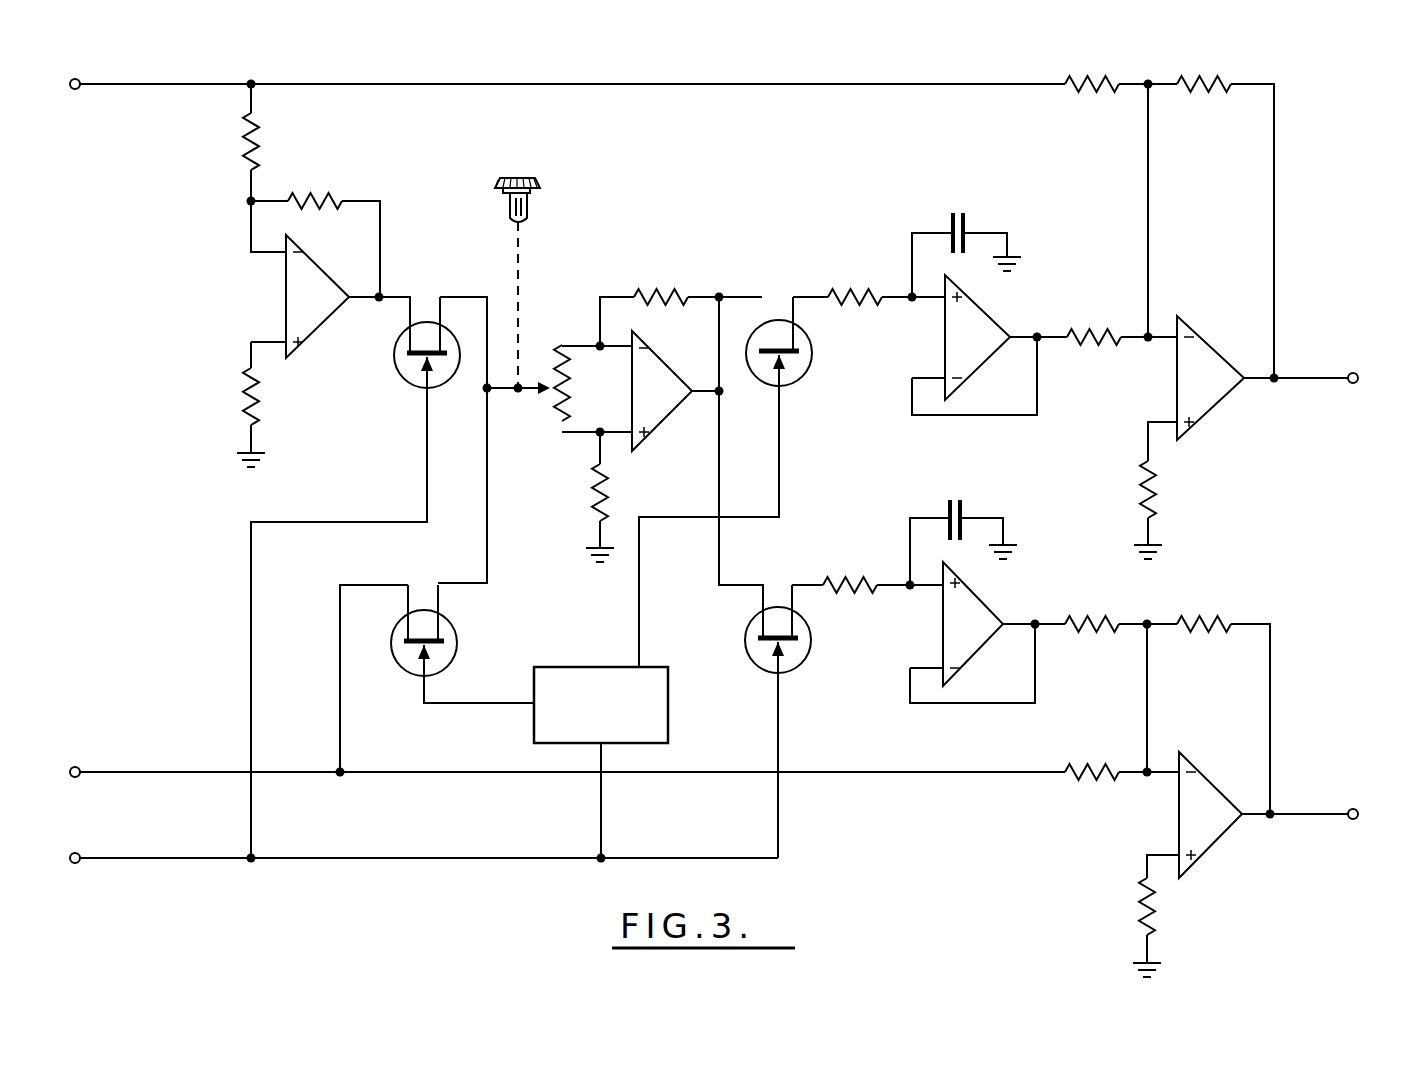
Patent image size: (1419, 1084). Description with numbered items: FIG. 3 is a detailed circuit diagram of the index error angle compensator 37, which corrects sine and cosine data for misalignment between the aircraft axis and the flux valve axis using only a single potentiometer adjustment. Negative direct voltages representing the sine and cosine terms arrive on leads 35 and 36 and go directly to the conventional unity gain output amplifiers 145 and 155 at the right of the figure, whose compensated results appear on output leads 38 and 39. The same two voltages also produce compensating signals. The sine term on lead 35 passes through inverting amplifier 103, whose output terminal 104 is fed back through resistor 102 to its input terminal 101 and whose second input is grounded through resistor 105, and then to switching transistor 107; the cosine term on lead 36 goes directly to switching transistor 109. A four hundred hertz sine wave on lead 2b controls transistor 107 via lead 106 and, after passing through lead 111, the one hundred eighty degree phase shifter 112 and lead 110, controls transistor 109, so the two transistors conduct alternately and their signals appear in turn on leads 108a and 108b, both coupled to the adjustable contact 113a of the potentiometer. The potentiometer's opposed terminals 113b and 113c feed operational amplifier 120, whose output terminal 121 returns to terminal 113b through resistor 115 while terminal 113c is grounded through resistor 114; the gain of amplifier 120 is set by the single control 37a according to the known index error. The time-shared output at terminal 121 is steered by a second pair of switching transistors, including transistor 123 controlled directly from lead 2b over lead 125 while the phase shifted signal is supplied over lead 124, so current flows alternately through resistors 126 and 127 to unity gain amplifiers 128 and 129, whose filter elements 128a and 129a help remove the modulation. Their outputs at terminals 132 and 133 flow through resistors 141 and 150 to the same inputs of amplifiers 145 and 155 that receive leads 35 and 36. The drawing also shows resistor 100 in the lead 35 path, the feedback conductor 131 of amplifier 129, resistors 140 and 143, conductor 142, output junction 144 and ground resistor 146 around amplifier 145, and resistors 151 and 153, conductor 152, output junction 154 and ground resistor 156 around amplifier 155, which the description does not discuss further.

The lead 2b is at (130, 860).
The lead 35 is at (112, 86).
The lead 36 is at (130, 775).
The index error angle compensator 37 is at (1308, 109).
The single control 37a is at (534, 180).
The output lead 38 is at (1328, 378).
The output lead 39 is at (1344, 814).
The resistor 100 is at (266, 148).
The input terminal 101 is at (245, 201).
The resistor 102 is at (318, 192).
The inverting amplifier 103 is at (285, 297).
The output terminal 104 is at (384, 296).
The resistor 105 is at (249, 395).
The lead 106 is at (250, 586).
The switching transistor 107 is at (394, 362).
The lead 108a is at (443, 296).
The lead 108b is at (486, 554).
The switching transistor 109 is at (448, 634).
The lead 110 is at (462, 706).
The lead 111 is at (598, 818).
The 180° phase shifter 112 is at (578, 667).
The adjustable contact 113a is at (531, 398).
The terminal 113b is at (600, 342).
The terminal 113c is at (604, 436).
The resistor 114 is at (602, 505).
The resistor 115 is at (650, 290).
The operational amplifier 120 is at (662, 367).
The output terminal 121 is at (724, 396).
The switching transistor 123 is at (748, 627).
The lead 124 is at (781, 450).
The lead 125 is at (778, 734).
The resistor 126 is at (843, 290).
The resistor 127 is at (842, 580).
The unity gain amplifier 128 is at (942, 351).
The filter resistor 128a is at (959, 214).
The unity gain amplifier 129 is at (940, 637).
The filter resistor 129a is at (967, 506).
The feedback conductor 131 is at (975, 705).
The output terminal 132 is at (1043, 341).
The output terminal 133 is at (1033, 620).
The resistor 140 is at (1093, 90).
The resistor 141 is at (1088, 331).
The conductor 142 is at (1149, 213).
The feedback resistor 143 is at (1205, 90).
The output junction 144 is at (1274, 383).
The unity gain output amplifier 145 is at (1196, 340).
The resistor 146 is at (1156, 480).
The resistor 150 is at (1090, 630).
The resistor 151 is at (1088, 767).
The conductor 152 is at (1149, 724).
The feedback resistor 153 is at (1207, 630).
The output junction 154 is at (1270, 819).
The unity gain output amplifier 155 is at (1176, 825).
The resistor 156 is at (1156, 901).